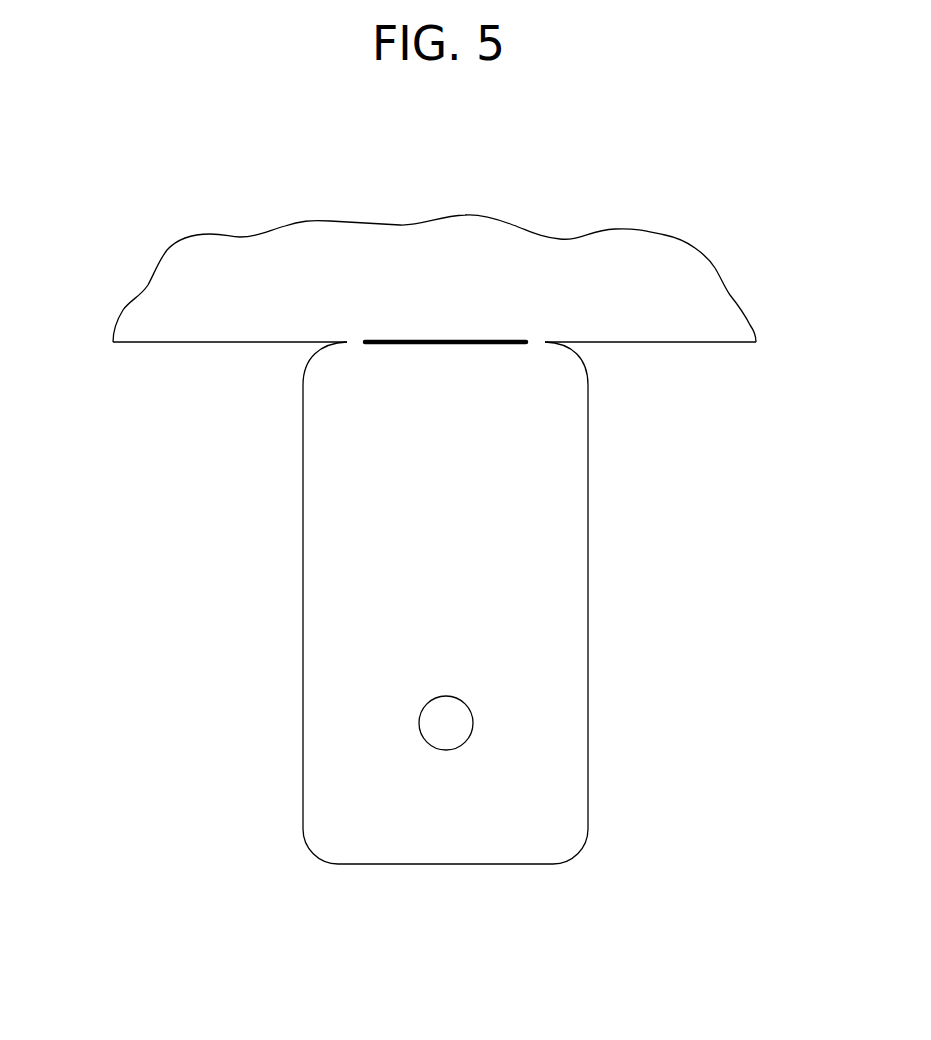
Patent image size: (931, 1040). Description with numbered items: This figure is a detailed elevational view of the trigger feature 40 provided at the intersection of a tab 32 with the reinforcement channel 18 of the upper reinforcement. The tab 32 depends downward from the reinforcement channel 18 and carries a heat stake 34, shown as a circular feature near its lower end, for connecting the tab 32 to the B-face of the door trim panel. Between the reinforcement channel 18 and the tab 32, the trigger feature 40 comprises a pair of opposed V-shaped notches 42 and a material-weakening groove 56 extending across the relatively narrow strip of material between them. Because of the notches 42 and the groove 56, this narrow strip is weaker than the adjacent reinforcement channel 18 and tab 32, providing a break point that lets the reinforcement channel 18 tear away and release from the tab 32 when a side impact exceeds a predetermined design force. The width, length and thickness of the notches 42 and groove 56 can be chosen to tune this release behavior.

The reinforcement channel 18 is at (648, 273).
The material-weakening groove 56 is at (442, 338).
The V-shaped notches 42 is at (345, 343).
The trigger feature 40 is at (426, 603).
The tab 32 is at (433, 603).
The heat stake 34 is at (473, 731).